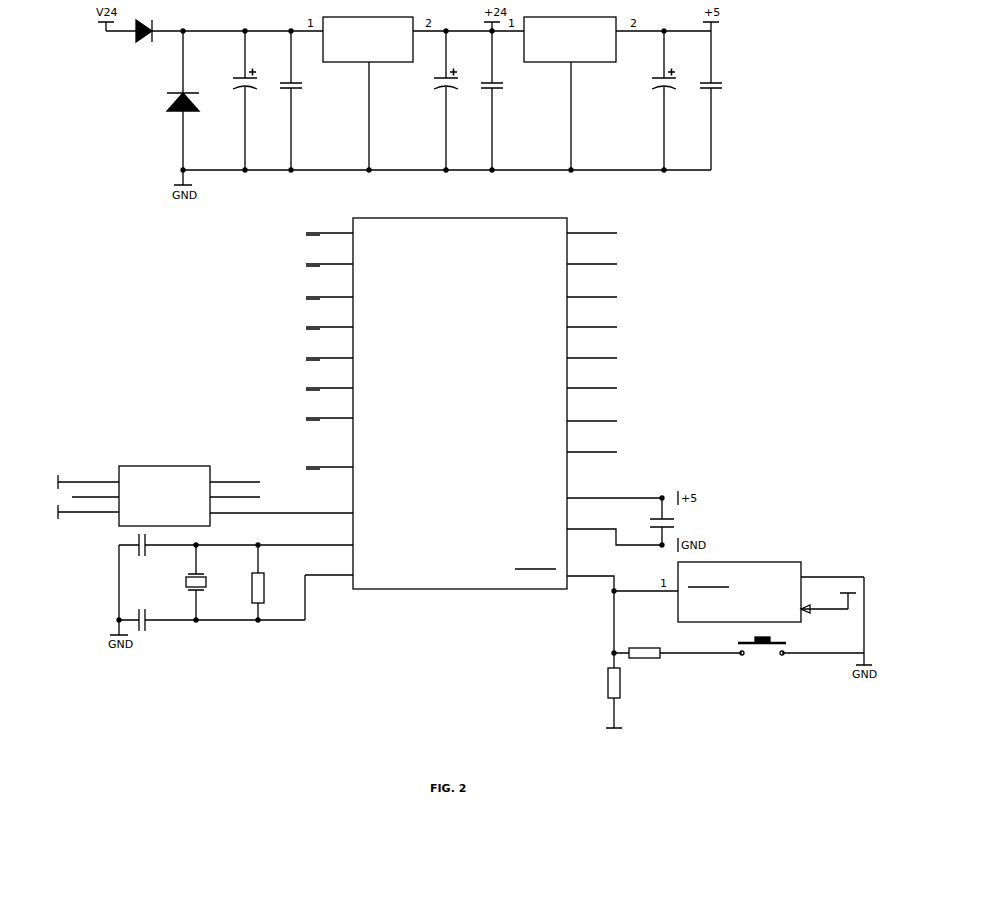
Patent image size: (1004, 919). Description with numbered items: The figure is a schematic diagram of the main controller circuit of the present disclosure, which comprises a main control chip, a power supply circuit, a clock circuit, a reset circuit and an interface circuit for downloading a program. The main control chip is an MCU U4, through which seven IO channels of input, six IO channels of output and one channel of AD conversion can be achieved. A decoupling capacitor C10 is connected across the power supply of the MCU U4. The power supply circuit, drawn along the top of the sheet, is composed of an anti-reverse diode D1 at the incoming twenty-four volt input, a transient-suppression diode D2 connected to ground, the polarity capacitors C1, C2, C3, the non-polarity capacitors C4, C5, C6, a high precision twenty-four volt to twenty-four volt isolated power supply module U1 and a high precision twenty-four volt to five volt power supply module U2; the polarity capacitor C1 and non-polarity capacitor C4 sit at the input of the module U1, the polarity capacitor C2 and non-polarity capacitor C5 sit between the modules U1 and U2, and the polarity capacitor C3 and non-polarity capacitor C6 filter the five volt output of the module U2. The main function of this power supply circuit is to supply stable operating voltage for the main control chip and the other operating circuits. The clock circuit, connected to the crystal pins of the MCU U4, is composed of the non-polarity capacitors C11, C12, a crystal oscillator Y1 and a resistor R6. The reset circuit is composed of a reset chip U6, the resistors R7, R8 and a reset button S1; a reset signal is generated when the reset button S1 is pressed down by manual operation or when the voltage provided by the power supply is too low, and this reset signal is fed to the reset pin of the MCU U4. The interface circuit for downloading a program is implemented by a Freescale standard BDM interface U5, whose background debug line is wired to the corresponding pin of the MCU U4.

The anti-reverse diode D1 is at (143, 23).
The transient-suppression diode D2 is at (192, 100).
The polarity capacitor C1 is at (253, 100).
The polarity capacitor C2 is at (454, 100).
The polarity capacitor C3 is at (672, 100).
The non-polarity capacitor C4 is at (296, 100).
The non-polarity capacitor C5 is at (498, 100).
The non-polarity capacitor C6 is at (717, 100).
The DC24V/24V isolated power supply module U1 is at (368, 86).
The DC24V/5V power supply module U2 is at (570, 86).
The main control chip U4 is at (411, 411).
The BDM interface U5 is at (144, 488).
The reset chip U6 is at (771, 584).
The decoupling capacitor C10 is at (674, 521).
The non-polarity capacitor C11 is at (132, 543).
The non-polarity capacitor C12 is at (132, 618).
The crystal oscillator Y1 is at (191, 582).
The resistor R6 is at (266, 582).
The resistor R7 is at (644, 646).
The resistor R8 is at (621, 699).
The reset button S1 is at (762, 649).